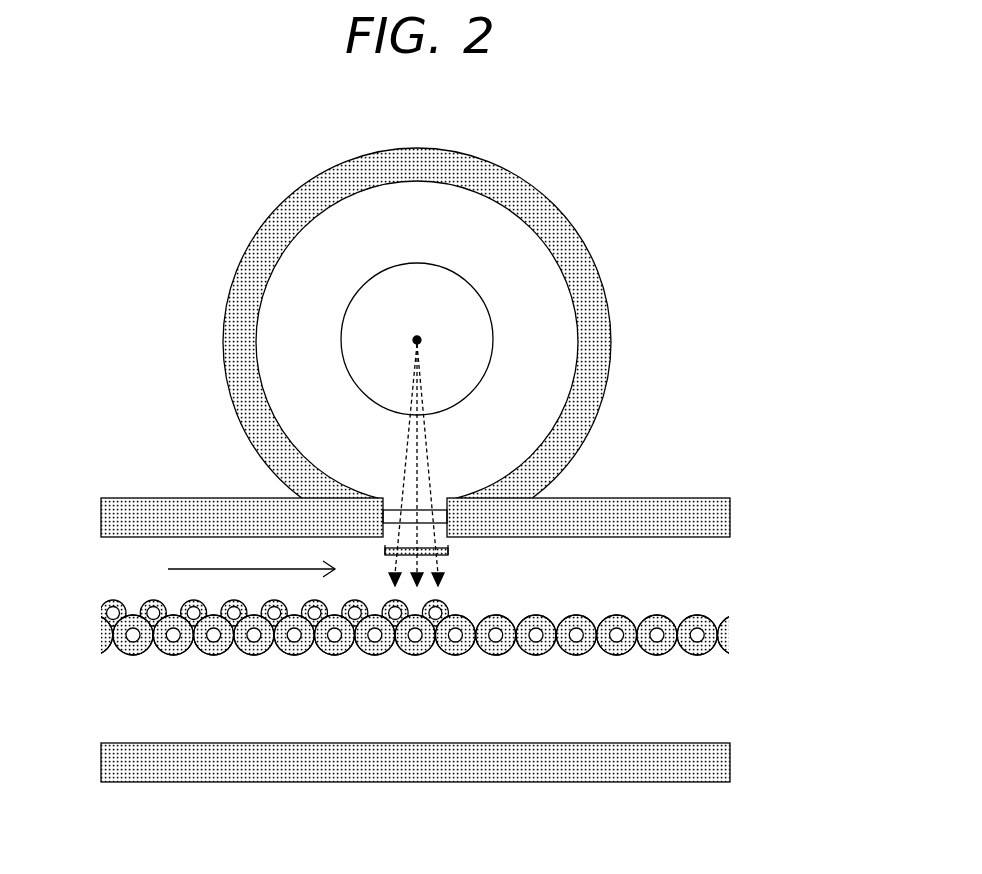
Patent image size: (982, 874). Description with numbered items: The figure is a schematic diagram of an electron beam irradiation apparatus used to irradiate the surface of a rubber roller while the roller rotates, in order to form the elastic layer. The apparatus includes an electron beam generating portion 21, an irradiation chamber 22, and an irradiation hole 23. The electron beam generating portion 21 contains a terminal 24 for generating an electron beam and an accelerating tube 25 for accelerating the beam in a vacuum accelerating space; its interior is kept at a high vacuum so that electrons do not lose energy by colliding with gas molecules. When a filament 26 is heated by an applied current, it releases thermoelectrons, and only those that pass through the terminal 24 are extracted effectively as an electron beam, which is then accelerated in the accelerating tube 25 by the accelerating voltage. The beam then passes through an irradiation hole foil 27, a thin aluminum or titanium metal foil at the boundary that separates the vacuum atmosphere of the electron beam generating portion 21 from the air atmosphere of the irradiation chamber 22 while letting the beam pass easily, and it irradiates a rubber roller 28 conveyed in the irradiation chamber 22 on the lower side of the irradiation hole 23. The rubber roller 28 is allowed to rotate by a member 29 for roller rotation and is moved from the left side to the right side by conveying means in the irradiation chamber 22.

The electron beam generating portion 21 is at (480, 220).
The irradiation chamber 22 is at (565, 685).
The irradiation hole 23 is at (415, 553).
The terminal 24 is at (492, 370).
The accelerating tube 25 is at (273, 237).
The filament 26 is at (421, 338).
The irradiation hole foil 27 is at (405, 508).
The rubber roller 28 is at (405, 645).
The member for roller rotation 29 is at (170, 652).